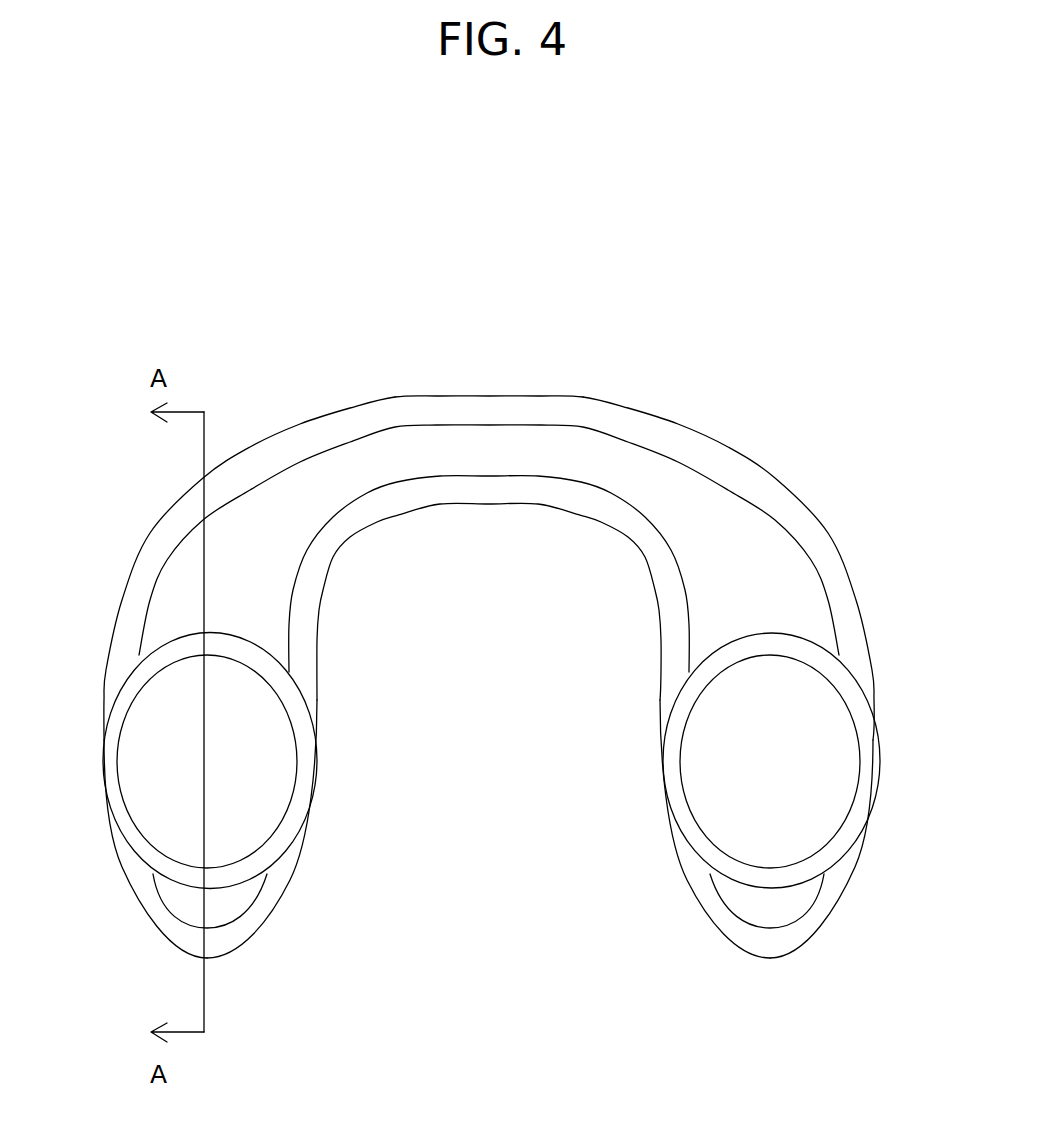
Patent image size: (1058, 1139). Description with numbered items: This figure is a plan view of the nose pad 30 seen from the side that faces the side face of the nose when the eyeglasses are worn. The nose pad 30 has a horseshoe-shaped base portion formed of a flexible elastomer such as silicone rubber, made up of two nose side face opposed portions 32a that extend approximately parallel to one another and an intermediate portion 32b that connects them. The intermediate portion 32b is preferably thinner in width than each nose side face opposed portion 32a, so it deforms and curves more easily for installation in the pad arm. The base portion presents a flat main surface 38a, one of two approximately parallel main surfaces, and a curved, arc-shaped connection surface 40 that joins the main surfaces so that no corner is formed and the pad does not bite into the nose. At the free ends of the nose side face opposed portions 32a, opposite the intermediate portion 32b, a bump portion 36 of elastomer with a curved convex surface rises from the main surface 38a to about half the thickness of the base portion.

The nose pad 30 is at (678, 248).
The nose side face opposed portion 32a is at (122, 598).
The intermediate portion 32b is at (487, 393).
The bump portion 36 is at (268, 763).
The main surface 38a is at (735, 542).
The connection surface 40 is at (670, 435).